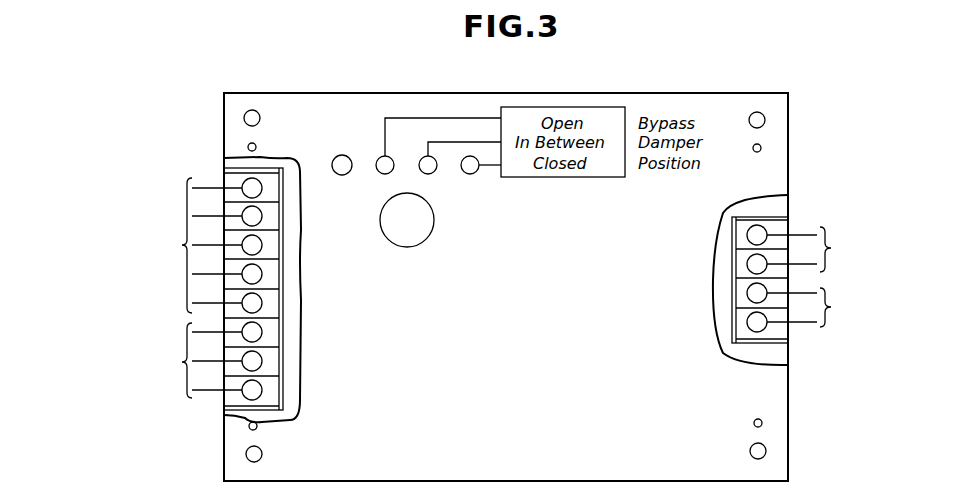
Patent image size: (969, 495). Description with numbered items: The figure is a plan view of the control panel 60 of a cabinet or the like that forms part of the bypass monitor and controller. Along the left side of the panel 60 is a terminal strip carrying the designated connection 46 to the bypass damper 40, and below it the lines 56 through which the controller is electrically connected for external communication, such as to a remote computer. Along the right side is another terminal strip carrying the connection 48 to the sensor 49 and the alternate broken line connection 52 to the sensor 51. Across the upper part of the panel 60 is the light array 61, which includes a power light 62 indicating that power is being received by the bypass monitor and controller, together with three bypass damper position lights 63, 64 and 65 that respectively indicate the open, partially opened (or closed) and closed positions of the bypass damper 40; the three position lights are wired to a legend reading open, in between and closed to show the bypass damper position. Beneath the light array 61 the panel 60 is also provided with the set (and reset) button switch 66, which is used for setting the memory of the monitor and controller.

The control panel 60 is at (521, 364).
The connection to bypass damper 46 is at (187, 190).
The bypass damper 40 is at (140, 245).
The lines for external communication 56 is at (187, 378).
The light array 61 is at (320, 167).
The power light 62 is at (333, 169).
The bypass damper position light 63 is at (391, 173).
The bypass damper position light 64 is at (433, 173).
The bypass damper position light 65 is at (469, 174).
The set button switch 66 is at (434, 219).
The connection to sensor 48 is at (838, 216).
The sensor 49 is at (868, 252).
The sensor 51 is at (868, 311).
The alternate broken line connection to sensor 52 is at (829, 327).